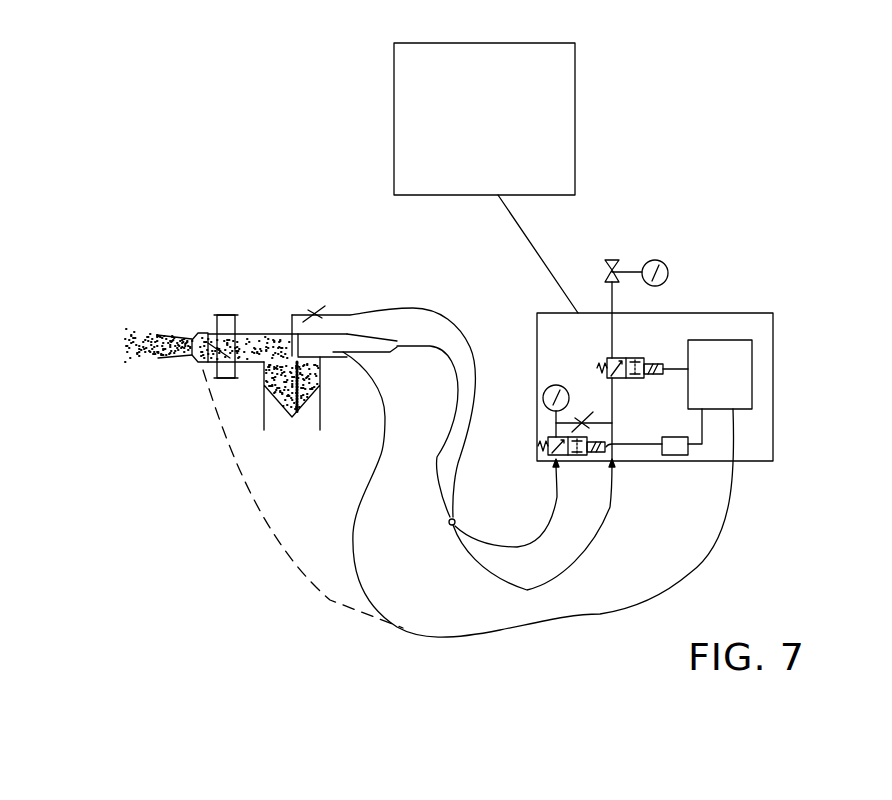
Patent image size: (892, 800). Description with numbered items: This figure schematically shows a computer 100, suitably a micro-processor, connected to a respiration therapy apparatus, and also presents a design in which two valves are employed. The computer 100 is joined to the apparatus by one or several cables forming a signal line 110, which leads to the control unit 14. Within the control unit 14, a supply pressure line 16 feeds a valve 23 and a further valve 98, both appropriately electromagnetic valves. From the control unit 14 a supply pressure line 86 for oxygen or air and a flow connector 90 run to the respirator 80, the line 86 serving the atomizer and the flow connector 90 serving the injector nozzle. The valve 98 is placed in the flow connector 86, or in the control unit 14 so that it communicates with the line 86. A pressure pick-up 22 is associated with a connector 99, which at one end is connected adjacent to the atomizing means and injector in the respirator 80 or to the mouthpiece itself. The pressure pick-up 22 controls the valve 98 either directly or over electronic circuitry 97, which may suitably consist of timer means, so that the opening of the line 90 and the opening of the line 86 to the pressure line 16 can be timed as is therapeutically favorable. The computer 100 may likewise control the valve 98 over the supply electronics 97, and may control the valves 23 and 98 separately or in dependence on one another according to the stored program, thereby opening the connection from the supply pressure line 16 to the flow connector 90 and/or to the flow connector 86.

The computer 100 is at (590, 34).
The signal line 110 is at (606, 238).
The respirator 80 is at (262, 332).
The control unit 14 is at (738, 312).
The supply pressure line 16 is at (613, 299).
The valve 23 is at (627, 358).
The pressure pick-up 22 is at (720, 374).
The valve 98 is at (548, 437).
The electronic circuitry 97 is at (672, 455).
The flow connector 90 is at (505, 547).
The supply pressure line 86 is at (588, 550).
The connector 99 is at (510, 637).